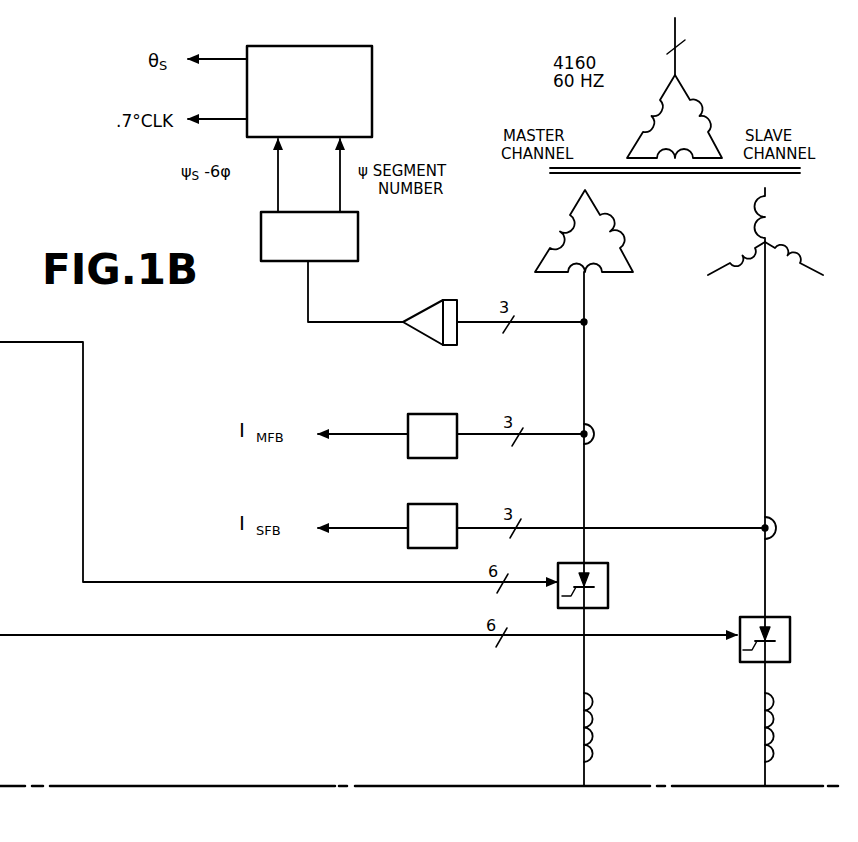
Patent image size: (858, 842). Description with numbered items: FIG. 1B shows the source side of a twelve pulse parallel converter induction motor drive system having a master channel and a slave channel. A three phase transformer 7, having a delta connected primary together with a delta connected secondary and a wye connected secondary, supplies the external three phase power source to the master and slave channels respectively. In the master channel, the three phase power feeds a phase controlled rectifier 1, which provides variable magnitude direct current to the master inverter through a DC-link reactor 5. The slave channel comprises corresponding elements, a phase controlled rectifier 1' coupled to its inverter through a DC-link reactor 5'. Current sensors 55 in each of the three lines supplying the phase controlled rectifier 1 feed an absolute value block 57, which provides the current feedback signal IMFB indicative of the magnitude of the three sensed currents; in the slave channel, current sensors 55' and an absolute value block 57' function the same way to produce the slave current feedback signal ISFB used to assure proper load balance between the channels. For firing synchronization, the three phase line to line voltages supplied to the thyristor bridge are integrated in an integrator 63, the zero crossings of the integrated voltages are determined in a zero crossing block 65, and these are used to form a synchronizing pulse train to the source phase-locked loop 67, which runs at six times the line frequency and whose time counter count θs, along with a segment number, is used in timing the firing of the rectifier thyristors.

The source phase-locked loop 67 is at (372, 104).
The zero crossing detector block 65 is at (261, 228).
The integrator 63 is at (445, 300).
The three phase transformer 7 is at (684, 211).
The current sensors 55 is at (606, 426).
The current sensors 55' is at (789, 528).
The absolute value block 57 is at (406, 444).
The absolute value block 57' is at (405, 524).
The phase controlled rectifier 1 is at (599, 581).
The phase controlled rectifier 1' is at (781, 627).
The DC-link reactor 5 is at (604, 727).
The DC-link reactor 5' is at (785, 727).